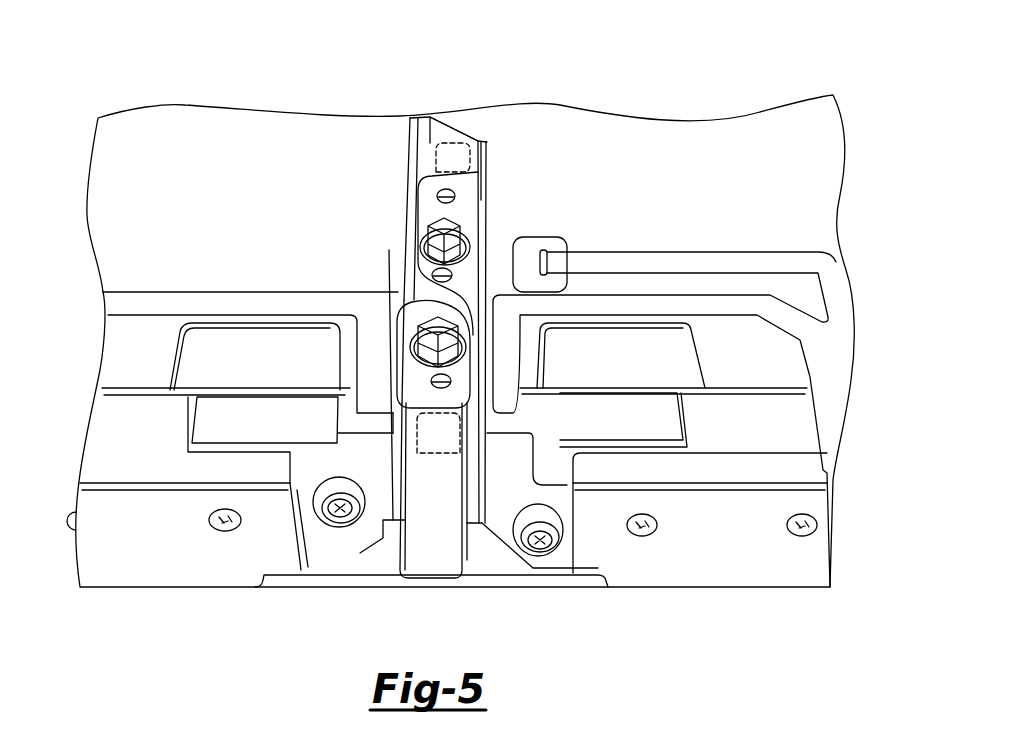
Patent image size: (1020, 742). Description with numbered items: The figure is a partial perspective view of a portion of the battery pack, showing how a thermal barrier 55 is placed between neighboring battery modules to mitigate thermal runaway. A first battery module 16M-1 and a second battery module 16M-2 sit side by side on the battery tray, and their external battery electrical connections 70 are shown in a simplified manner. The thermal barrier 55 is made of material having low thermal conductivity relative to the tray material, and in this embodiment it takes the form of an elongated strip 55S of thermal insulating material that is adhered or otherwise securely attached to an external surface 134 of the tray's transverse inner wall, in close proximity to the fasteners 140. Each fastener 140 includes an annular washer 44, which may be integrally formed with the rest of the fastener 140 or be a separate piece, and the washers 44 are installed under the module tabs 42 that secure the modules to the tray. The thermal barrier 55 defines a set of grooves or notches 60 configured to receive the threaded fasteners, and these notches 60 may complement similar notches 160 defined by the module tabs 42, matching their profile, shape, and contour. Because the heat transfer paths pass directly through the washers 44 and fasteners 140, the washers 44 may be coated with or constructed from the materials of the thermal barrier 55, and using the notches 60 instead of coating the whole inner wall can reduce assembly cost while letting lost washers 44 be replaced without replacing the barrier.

The external battery electrical connections 70 is at (140, 351).
The first battery module 16M-1 is at (239, 377).
The second battery module 16M-2 is at (661, 388).
The thermal barrier 55 is at (440, 157).
The elongated strip 55S is at (442, 457).
The external surface 134 is at (447, 137).
The module tab 42 is at (467, 192).
The fastener 140 is at (447, 233).
The annular washer 44 is at (458, 237).
The notch 160 is at (412, 212).
The notch 60 is at (411, 272).